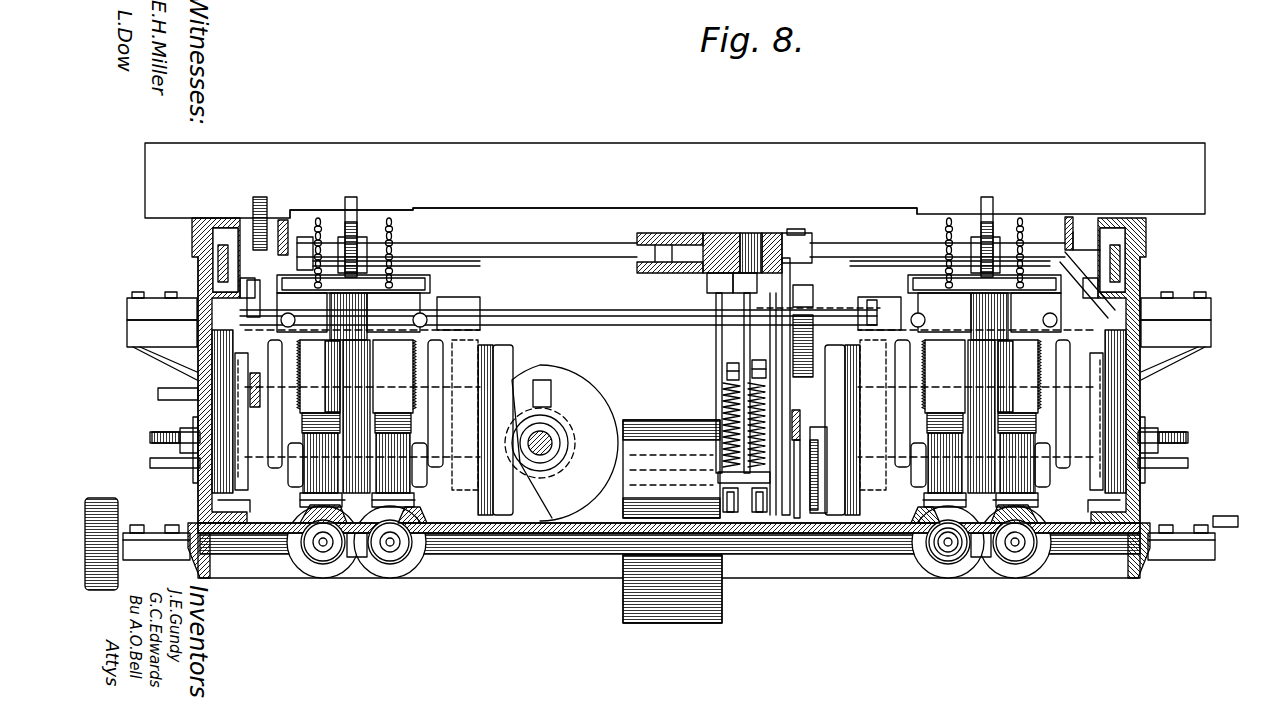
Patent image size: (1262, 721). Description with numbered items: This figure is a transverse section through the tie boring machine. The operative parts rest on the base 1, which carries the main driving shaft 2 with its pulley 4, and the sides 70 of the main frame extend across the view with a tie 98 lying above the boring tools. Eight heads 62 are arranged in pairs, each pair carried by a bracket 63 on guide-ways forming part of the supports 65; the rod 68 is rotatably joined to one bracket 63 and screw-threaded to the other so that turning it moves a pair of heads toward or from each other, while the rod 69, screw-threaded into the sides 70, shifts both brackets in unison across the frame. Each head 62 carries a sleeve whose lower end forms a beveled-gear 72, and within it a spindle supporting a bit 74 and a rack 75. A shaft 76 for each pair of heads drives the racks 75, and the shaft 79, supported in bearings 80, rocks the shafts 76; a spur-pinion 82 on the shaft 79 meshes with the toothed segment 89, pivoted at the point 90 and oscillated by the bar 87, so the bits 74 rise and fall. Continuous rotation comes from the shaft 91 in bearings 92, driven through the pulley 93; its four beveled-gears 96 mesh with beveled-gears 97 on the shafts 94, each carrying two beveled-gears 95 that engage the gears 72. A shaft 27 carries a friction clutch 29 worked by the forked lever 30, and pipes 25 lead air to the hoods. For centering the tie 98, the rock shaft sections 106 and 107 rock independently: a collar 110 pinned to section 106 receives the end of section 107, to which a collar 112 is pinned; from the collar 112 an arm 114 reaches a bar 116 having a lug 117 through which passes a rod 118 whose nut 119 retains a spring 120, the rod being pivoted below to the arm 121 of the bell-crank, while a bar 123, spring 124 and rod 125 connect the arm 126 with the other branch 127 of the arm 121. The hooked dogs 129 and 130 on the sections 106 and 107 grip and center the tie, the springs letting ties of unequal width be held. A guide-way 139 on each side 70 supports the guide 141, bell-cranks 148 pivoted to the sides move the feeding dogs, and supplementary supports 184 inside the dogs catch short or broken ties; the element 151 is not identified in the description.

The base 1 is at (832, 575).
The main driving shaft 2 is at (1238, 522).
The pulley 4 is at (700, 625).
The pipe 25 is at (430, 283).
The shaft 27 is at (552, 438).
The friction clutch 29 is at (580, 377).
The forked lever 30 is at (549, 380).
The head 62 is at (669, 393).
The bracket 63 is at (240, 292).
The support 65 is at (513, 365).
The rod 68 is at (152, 465).
The rod 69 is at (152, 432).
The sides of the main frame 70 is at (192, 257).
The beveled-gear 72 is at (330, 510).
The bit 74 is at (320, 222).
The rack 75 is at (300, 371).
The shaft 76 is at (295, 321).
The shaft 79 is at (607, 310).
The bearing 80 is at (150, 330).
The spur-pinion 82 is at (813, 290).
The bar 87 is at (800, 425).
The toothed segment 89 is at (813, 360).
The pivot point 90 is at (827, 440).
The shaft 91 is at (357, 557).
The bearing 92 is at (162, 548).
The pulley 93 is at (112, 590).
The shaft 94 is at (323, 548).
The beveled-gear 95 is at (935, 565).
The beveled-gear 96 is at (300, 565).
The beveled-gear 97 is at (333, 555).
The tie 98 is at (675, 171).
The rock shaft section 106 is at (537, 243).
The rock shaft section 107 is at (872, 243).
The collar 110 is at (672, 275).
The collar 112 is at (735, 240).
The arm 114 is at (757, 290).
The bar 116 is at (750, 341).
The lug 117 is at (768, 478).
The rod 118 is at (764, 370).
The nut 119 is at (766, 372).
The spring 120 is at (765, 410).
The arm of the bell-crank 121 is at (760, 535).
The bar 123 is at (716, 346).
The spring 124 is at (724, 395).
The rod 125 is at (727, 368).
The arm 126 is at (707, 290).
The branch 127 is at (735, 535).
The hooked dog 129 is at (350, 197).
The hooked dog 130 is at (988, 197).
The guide-way 139 is at (195, 270).
The guide 141 is at (230, 228).
The bell-crank 148 is at (250, 376).
The step 151 is at (413, 210).
The supplementary support 184 is at (284, 220).